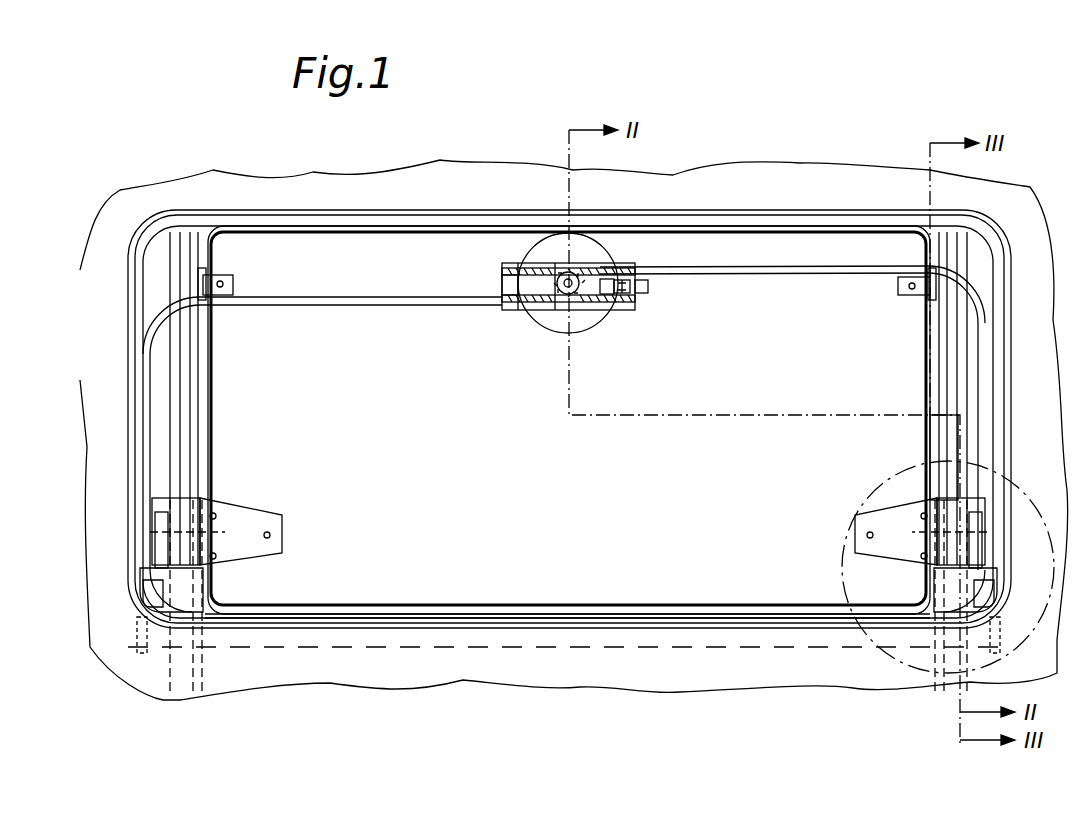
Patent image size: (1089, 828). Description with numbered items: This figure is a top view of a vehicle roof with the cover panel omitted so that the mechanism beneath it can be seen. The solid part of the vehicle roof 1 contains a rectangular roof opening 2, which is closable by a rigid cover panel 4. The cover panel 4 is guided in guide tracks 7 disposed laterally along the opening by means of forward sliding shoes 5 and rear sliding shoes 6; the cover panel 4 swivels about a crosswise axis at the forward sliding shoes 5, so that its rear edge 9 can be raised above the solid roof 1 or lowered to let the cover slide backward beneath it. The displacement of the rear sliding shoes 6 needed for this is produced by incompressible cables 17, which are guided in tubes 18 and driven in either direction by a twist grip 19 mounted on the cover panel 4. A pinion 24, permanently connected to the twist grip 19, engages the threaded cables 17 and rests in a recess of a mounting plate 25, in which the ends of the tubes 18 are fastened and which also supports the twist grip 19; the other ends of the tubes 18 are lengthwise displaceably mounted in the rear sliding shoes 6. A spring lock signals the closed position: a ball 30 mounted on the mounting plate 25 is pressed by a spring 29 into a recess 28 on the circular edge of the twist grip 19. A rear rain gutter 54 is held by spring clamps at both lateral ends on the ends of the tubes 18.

The solid part of the vehicle roof 1 is at (401, 183).
The roof opening 2 is at (345, 213).
The cover panel 4 is at (403, 217).
The forward sliding shoes 5 is at (205, 277).
The rear sliding shoes 6 is at (190, 602).
The guide tracks 7 is at (190, 420).
The rear edge 9 is at (497, 630).
The incompressible cables 17 is at (510, 268).
The tubes 18 is at (343, 302).
The twist grip 19 is at (522, 321).
The pinion 24 is at (593, 285).
The mounting plate 25 is at (542, 306).
The recess 28 is at (612, 313).
The spring 29 is at (641, 297).
The ball 30 is at (621, 288).
The rear rain gutter 54 is at (570, 616).